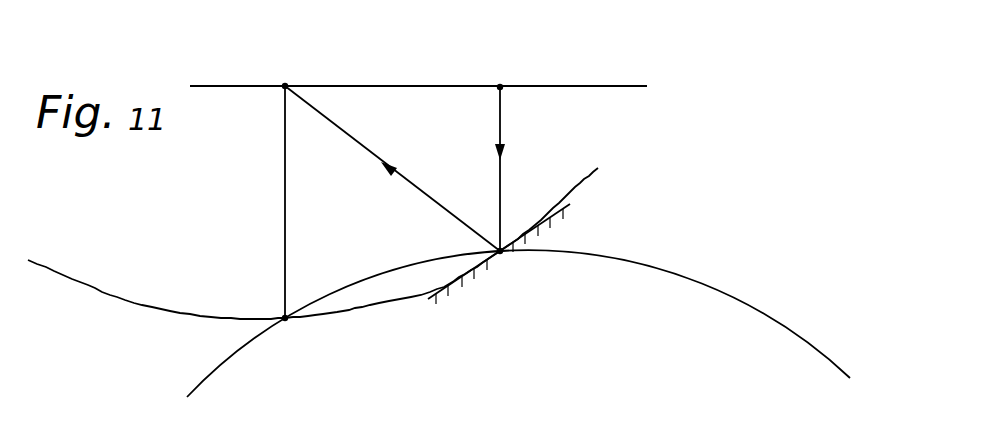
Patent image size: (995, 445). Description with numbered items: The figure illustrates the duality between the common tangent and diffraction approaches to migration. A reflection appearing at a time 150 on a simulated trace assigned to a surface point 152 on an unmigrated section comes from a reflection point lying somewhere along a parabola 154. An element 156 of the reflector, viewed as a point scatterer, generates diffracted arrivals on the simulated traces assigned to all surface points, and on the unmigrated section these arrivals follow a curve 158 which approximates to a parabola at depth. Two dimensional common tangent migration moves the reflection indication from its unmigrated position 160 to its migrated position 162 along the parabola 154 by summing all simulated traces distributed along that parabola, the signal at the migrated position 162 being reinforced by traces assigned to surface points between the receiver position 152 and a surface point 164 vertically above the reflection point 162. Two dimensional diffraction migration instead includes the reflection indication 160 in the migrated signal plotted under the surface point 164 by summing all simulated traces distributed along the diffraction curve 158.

The time 150 is at (285, 184).
The surface point 152 is at (285, 86).
The parabola 154 is at (124, 301).
The element of the reflector 156 is at (428, 299).
The diffraction curve 158 is at (680, 275).
The unmigrated position 160 is at (286, 321).
The migrated position 162 is at (502, 254).
The surface point 164 is at (500, 86).